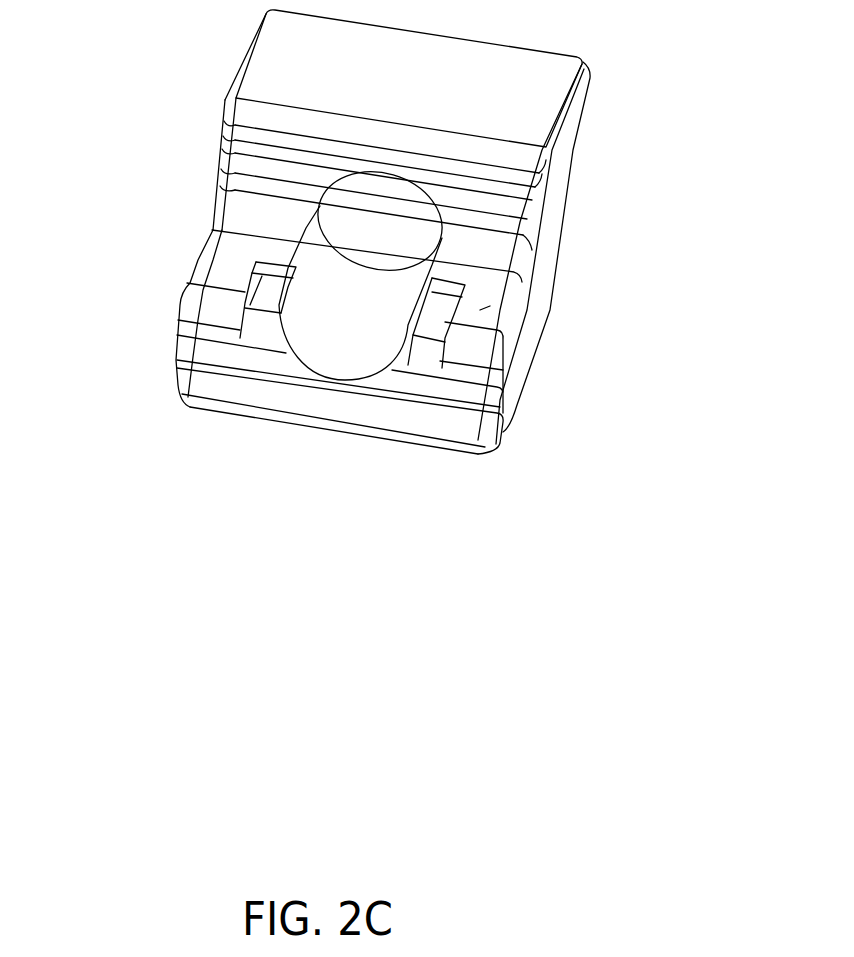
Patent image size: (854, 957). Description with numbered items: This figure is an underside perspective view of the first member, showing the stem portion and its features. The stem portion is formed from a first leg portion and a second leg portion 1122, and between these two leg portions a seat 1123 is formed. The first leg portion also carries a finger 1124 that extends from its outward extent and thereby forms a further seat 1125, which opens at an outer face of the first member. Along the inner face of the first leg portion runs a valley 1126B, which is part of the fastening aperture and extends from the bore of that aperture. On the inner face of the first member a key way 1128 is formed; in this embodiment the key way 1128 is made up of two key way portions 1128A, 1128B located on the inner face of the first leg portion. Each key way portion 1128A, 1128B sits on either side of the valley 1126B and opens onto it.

The second leg portion 1122 is at (507, 157).
The seat 1123 is at (270, 165).
The finger 1124 is at (222, 352).
The seat 1125 is at (457, 426).
The valley 1126B is at (348, 357).
The key way 1128 is at (490, 309).
The key way portion 1128A is at (262, 328).
The key way portion 1128B is at (418, 357).